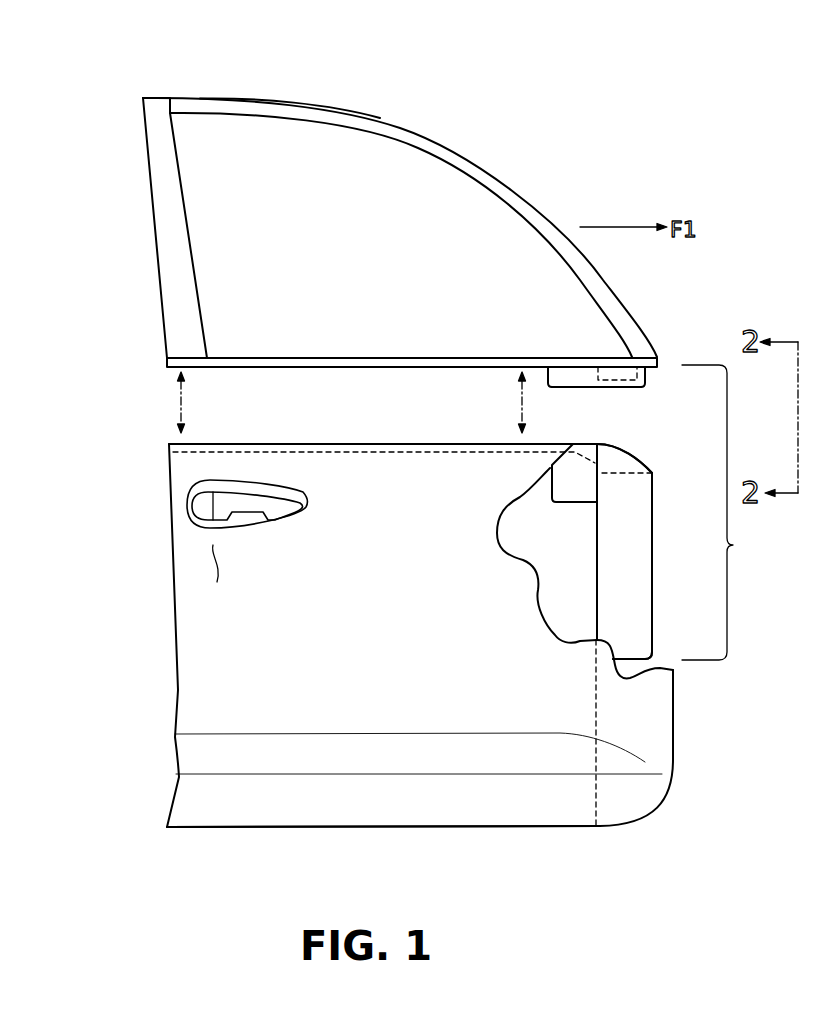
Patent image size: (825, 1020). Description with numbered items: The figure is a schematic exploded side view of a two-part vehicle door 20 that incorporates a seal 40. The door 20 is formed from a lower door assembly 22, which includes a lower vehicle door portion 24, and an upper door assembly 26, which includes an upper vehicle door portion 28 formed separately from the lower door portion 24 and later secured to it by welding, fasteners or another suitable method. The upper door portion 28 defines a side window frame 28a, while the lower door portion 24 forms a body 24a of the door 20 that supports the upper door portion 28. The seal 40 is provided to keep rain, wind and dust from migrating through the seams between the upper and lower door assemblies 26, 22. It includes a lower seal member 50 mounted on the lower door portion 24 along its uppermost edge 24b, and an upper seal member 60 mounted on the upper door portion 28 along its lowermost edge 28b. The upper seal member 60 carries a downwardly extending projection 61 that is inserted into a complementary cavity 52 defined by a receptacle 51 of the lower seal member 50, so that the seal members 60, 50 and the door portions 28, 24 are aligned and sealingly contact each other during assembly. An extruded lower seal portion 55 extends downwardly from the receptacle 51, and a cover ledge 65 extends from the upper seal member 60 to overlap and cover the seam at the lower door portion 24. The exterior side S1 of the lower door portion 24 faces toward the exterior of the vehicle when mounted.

The two-part vehicle door 20 is at (658, 143).
The lower door assembly 22 is at (214, 838).
The lower vehicle door portion 24 is at (215, 658).
The body of the door 24a is at (213, 563).
The uppermost edge of the lower door portion 24b is at (432, 445).
The upper door assembly 26 is at (407, 127).
The upper vehicle door portion 28 is at (167, 177).
The side window frame 28a is at (255, 115).
The lowermost edge of the upper door portion 28b is at (322, 362).
The seal 40 is at (725, 512).
The lower seal member 50 is at (668, 570).
The receptacle 51 is at (643, 463).
The cavity 52 is at (613, 463).
The extruded lower seal portion 55 is at (638, 613).
The upper seal member 60 is at (568, 360).
The projection 61 is at (650, 373).
The cover ledge 65 is at (557, 378).
The exterior side of the lower door portion S1 is at (220, 613).